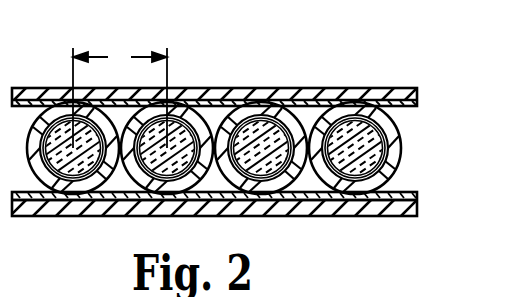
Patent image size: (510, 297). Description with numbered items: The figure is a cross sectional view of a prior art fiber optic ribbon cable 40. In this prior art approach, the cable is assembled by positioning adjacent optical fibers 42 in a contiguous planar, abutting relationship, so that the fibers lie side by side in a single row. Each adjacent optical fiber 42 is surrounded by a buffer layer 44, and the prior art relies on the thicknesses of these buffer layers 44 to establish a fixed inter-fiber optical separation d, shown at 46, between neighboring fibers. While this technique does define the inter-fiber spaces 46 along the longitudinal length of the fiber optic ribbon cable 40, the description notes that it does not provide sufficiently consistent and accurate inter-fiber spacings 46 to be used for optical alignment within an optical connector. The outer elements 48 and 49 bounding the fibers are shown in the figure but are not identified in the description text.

The fiber optic ribbon cable 40 is at (241, 144).
The optical fiber 42 is at (313, 112).
The buffer layer 44 is at (312, 200).
The inter-fiber optical separation d 46 is at (108, 56).
The face sheet 48 is at (418, 194).
The base plate 49 is at (387, 215).